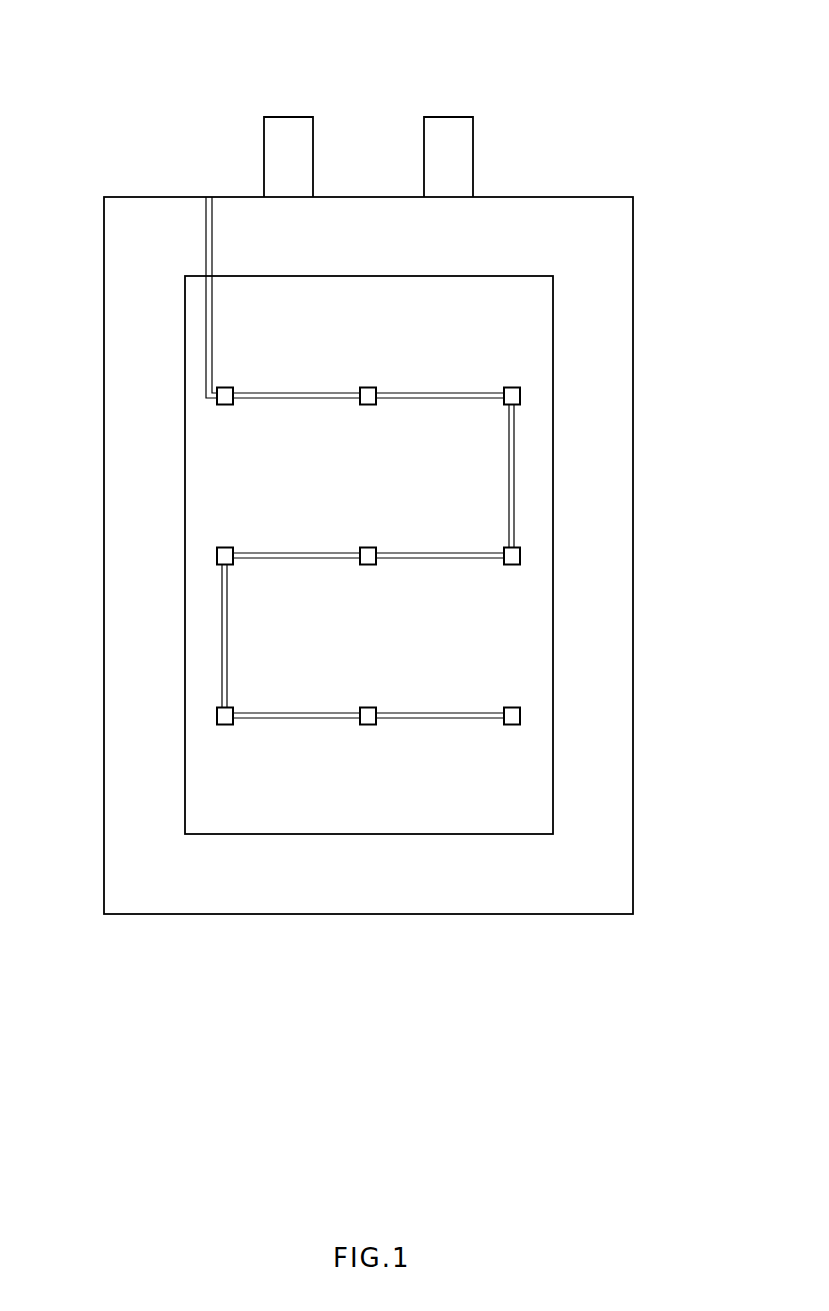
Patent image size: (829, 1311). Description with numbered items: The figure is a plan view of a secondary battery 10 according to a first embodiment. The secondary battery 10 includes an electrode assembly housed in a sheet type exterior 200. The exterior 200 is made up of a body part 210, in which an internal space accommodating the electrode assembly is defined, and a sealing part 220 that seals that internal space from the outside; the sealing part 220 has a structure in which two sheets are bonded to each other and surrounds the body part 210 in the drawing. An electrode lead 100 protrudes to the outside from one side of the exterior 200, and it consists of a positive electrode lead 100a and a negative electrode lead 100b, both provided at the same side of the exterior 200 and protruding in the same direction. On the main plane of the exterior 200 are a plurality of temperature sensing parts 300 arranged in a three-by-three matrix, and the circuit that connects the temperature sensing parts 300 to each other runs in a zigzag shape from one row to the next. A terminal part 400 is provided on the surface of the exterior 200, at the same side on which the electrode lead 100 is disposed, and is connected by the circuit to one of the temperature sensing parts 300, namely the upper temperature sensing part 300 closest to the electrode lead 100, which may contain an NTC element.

The secondary battery 10 is at (658, 464).
The electrode lead 100 is at (504, 99).
The positive electrode lead 100a is at (287, 133).
The negative electrode lead 100b is at (448, 133).
The sheet type exterior 200 is at (418, 506).
The body part 210 is at (503, 795).
The sealing part 220 is at (605, 858).
The temperature sensing part 300 is at (222, 405).
The terminal part 400 is at (207, 197).